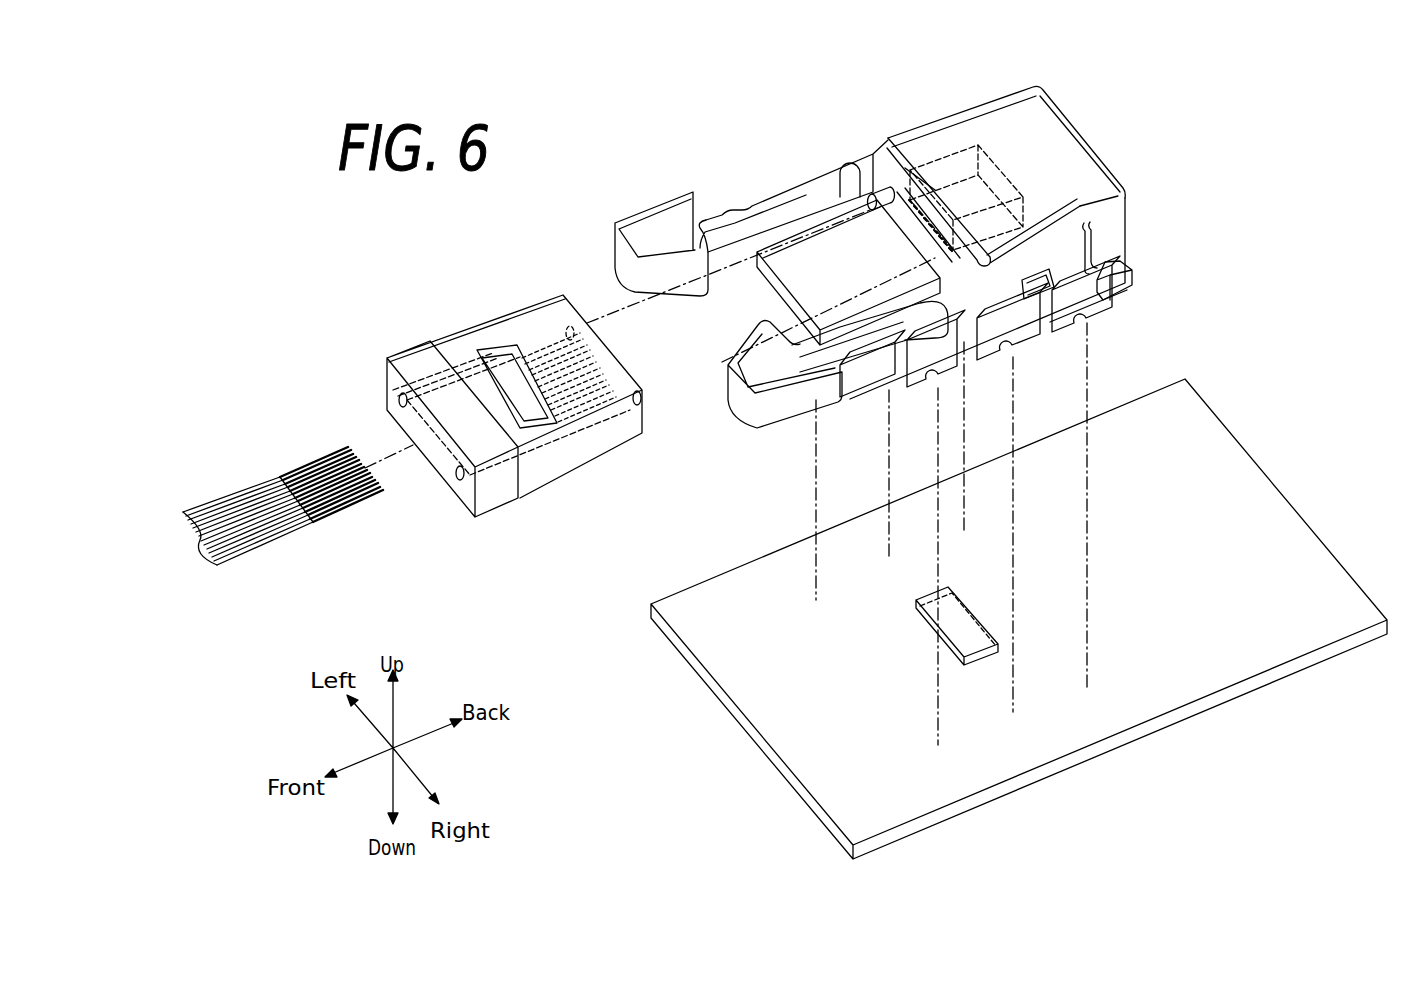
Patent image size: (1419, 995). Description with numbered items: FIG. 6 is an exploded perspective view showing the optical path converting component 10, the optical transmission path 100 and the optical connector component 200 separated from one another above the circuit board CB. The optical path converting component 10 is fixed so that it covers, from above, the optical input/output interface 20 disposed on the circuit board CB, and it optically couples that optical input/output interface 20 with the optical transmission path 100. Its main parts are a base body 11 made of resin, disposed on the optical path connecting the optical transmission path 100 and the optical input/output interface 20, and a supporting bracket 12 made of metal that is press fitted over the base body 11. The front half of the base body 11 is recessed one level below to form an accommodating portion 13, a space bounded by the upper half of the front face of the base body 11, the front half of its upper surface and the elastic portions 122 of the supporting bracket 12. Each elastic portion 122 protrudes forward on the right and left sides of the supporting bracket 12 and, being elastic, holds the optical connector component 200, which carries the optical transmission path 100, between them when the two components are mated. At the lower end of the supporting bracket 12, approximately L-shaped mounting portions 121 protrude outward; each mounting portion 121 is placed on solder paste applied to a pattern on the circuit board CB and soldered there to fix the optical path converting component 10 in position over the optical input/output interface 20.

The optical path converting component 10 is at (912, 98).
The base body 11 is at (1057, 130).
The supporting bracket 12 is at (990, 118).
The accommodating portion 13 is at (822, 245).
The mounting portion 121 is at (919, 385).
The elastic portion 122 is at (752, 219).
The optical connector component 200 is at (488, 332).
The optical transmission path 100 is at (271, 477).
The optical input/output interface 20 is at (973, 645).
The circuit board CB is at (1247, 480).